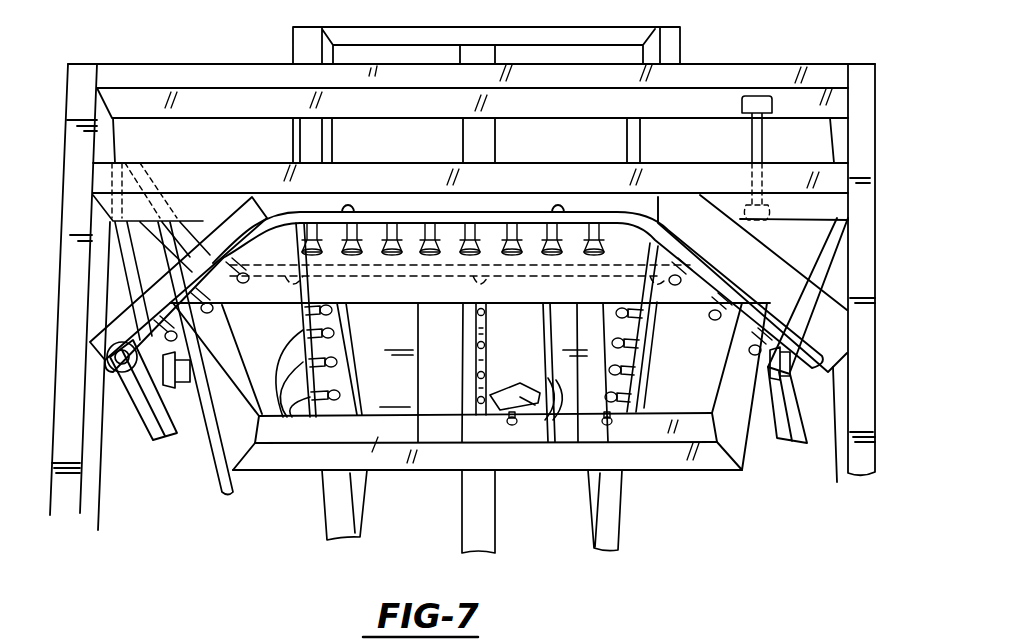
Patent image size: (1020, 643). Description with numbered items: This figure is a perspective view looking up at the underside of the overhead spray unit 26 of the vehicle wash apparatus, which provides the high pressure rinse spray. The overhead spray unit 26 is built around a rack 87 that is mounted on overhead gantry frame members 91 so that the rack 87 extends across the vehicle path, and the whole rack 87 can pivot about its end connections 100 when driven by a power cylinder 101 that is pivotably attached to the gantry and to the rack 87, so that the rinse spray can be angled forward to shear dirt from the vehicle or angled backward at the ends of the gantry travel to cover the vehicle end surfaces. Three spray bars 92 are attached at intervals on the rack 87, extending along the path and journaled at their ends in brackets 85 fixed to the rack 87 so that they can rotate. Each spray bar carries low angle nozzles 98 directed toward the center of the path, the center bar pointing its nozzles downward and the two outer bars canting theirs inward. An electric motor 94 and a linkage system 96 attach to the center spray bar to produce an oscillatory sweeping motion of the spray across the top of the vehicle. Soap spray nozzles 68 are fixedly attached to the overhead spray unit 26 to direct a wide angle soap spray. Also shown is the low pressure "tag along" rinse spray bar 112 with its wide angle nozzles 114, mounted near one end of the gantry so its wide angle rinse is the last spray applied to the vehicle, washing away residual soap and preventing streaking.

The overhead spray unit 26 is at (477, 399).
The soap spray nozzles 68 is at (510, 420).
The brackets 85 is at (472, 405).
The rack 87 is at (732, 465).
The overhead gantry frame members 91 is at (148, 405).
The spray bars 92 is at (320, 405).
The electric motor 94 is at (542, 400).
The linkage system 96 is at (525, 402).
The low angle nozzles 98 is at (283, 417).
The end connections 100 is at (200, 420).
The power cylinder 101 is at (783, 215).
The rinse spray bar 112 is at (712, 215).
The wide angle nozzles 114 is at (590, 220).